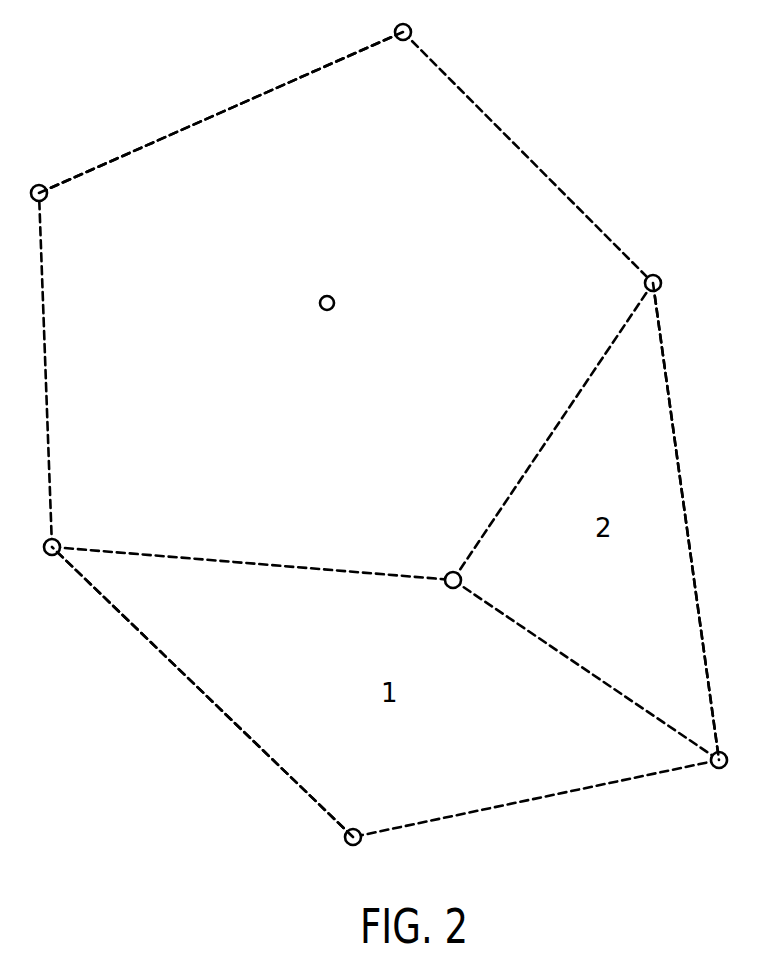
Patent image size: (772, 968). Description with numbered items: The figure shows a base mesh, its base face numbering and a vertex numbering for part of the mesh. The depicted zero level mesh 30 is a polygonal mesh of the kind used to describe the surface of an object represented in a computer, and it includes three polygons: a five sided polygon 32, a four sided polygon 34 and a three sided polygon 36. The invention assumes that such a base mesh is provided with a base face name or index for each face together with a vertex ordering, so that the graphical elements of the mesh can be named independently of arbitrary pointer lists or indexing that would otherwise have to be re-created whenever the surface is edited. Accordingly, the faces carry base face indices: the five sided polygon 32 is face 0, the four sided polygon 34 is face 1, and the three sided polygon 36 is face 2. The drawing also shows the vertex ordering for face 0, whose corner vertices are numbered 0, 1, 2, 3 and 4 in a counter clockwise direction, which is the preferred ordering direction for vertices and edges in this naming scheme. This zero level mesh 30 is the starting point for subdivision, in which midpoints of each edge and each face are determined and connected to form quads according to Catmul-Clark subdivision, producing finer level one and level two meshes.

The base face index / vertex index 0 is at (448, 573).
The base face index / vertex index 1 is at (645, 286).
The base face index / vertex index 2 is at (403, 41).
The vertex index 3 is at (46, 197).
The vertex index 4 is at (60, 543).
The zero level mesh 30 is at (666, 94).
The five sided polygon 32 is at (217, 110).
The four sided polygon 34 is at (220, 712).
The three sided polygon 36 is at (683, 486).